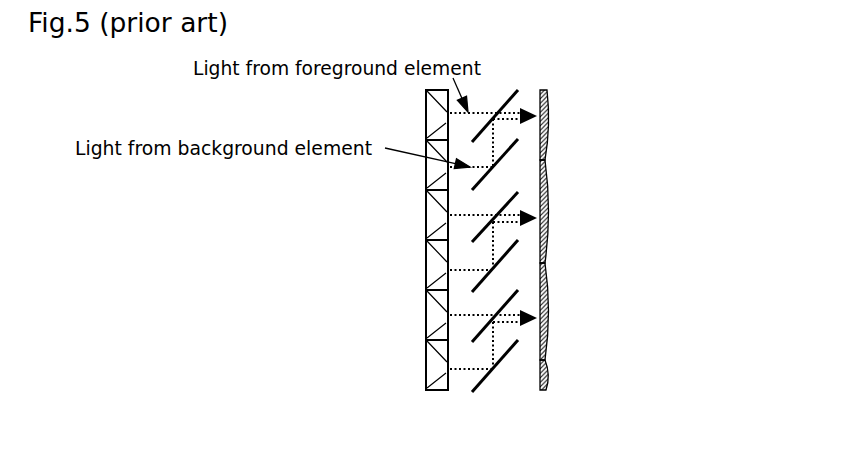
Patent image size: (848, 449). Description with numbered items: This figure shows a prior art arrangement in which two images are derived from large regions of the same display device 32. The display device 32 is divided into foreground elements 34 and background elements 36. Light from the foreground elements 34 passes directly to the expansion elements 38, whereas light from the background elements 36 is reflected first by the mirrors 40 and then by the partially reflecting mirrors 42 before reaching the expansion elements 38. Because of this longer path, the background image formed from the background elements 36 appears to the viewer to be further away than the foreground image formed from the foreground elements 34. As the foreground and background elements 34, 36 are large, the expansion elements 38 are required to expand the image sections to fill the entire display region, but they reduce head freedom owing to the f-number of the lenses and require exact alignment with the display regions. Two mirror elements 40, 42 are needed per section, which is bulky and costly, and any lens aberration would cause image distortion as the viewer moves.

The display device 32 is at (425, 233).
The foreground elements 34 is at (410, 315).
The background elements 36 is at (410, 360).
The expansion elements 38 is at (564, 107).
The mirrors 40 is at (503, 386).
The partially reflecting mirrors 42 is at (503, 330).